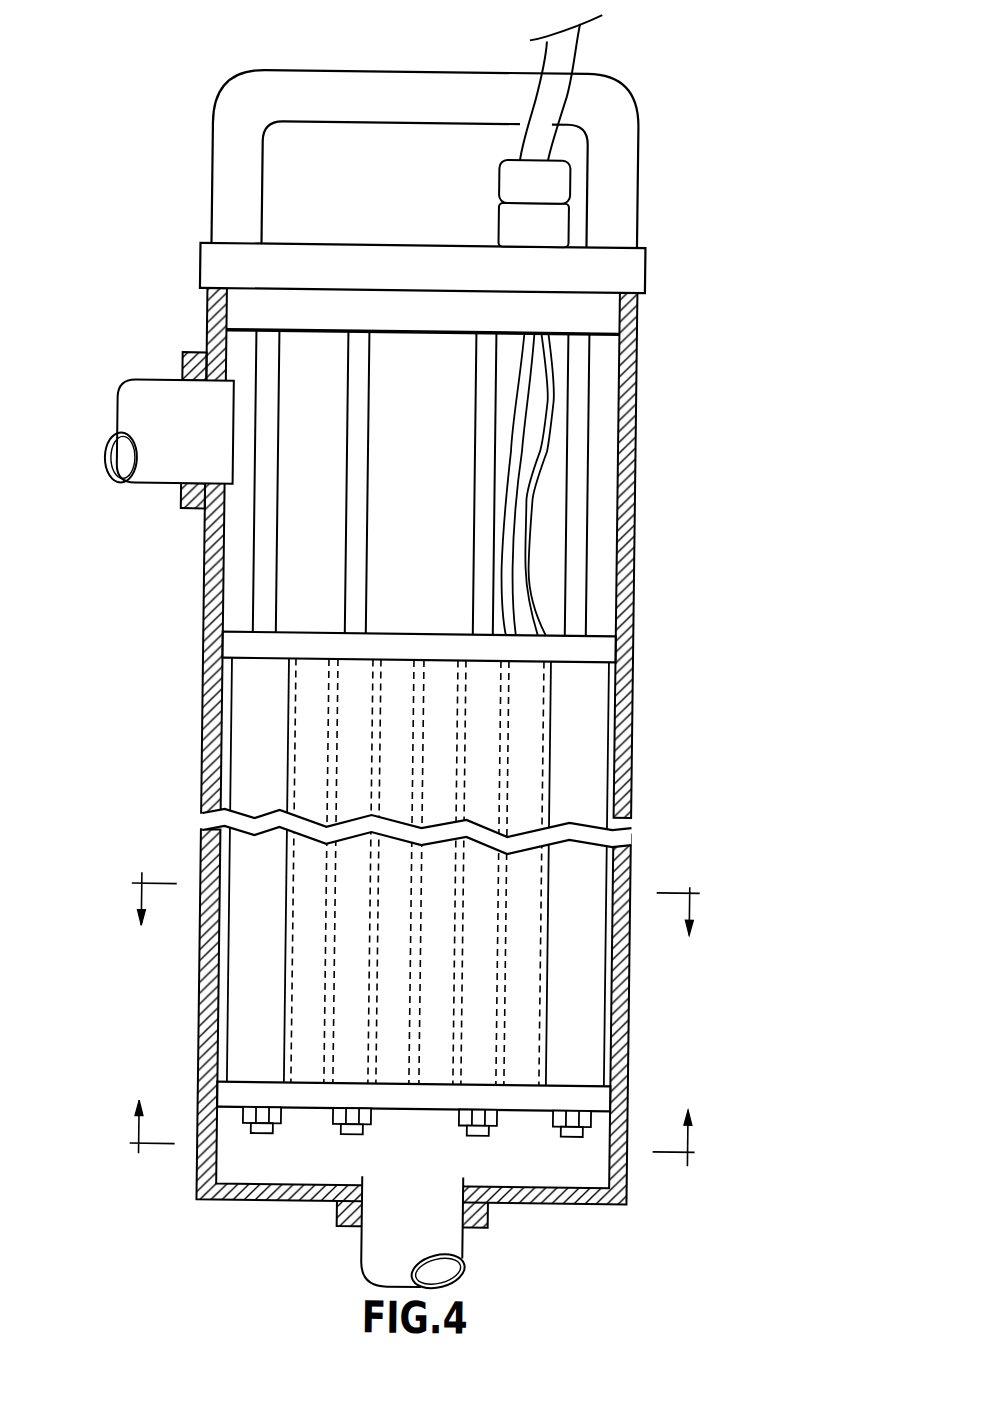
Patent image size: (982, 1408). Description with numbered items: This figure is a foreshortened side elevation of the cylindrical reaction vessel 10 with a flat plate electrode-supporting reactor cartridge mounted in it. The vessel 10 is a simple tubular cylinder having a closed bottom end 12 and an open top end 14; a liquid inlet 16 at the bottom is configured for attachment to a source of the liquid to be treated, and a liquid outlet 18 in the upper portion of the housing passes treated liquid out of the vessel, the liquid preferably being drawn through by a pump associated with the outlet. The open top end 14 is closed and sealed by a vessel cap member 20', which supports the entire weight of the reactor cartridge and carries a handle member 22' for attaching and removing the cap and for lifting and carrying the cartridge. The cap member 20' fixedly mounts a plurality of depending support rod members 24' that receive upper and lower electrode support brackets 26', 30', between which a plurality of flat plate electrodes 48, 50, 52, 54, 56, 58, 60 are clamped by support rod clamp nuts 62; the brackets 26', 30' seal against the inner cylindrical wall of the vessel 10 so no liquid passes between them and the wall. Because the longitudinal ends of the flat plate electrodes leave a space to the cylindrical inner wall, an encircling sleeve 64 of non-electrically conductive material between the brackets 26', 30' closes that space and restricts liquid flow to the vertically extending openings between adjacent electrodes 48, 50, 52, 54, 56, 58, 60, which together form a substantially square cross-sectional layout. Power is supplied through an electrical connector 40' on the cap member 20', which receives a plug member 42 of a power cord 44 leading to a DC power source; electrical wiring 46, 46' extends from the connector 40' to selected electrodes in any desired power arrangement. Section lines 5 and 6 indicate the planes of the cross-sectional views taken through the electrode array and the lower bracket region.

The reaction vessel 10 is at (633, 782).
The closed bottom end 12 is at (275, 1202).
The open top end 14 is at (202, 299).
The liquid inlet 16 is at (472, 1253).
The liquid outlet 18 is at (112, 410).
The vessel cap member 20' is at (423, 244).
The handle member 22' is at (425, 134).
The support rod members 24' is at (474, 483).
The upper electrode support bracket 26' is at (375, 643).
The lower electrode support bracket 30' is at (413, 1125).
The electrical connector 40' is at (496, 225).
The plug member 42 is at (493, 180).
The power cord 44 is at (572, 40).
The electrical wiring 46 is at (479, 484).
The electrical wiring 46' is at (479, 484).
The flat plate electrode 48 is at (296, 697).
The flat plate electrode 50 is at (330, 749).
The flat plate electrode 52 is at (370, 780).
The flat plate electrode 54 is at (412, 700).
The flat plate electrode 56 is at (454, 700).
The flat plate electrode 58 is at (508, 783).
The flat plate electrode 60 is at (553, 731).
The support rod clamp nuts 62 is at (283, 1111).
The encircling sleeve 64 is at (247, 719).
The section line 5- 5 is at (417, 903).
The section line 6- 6 is at (415, 1134).